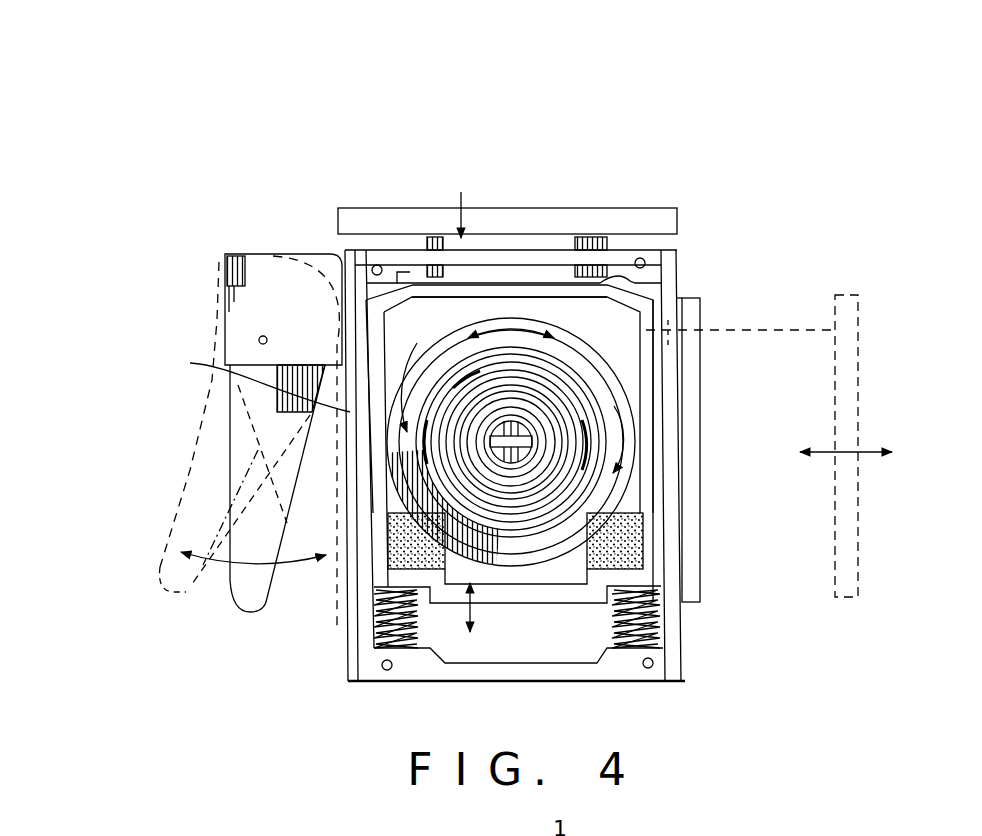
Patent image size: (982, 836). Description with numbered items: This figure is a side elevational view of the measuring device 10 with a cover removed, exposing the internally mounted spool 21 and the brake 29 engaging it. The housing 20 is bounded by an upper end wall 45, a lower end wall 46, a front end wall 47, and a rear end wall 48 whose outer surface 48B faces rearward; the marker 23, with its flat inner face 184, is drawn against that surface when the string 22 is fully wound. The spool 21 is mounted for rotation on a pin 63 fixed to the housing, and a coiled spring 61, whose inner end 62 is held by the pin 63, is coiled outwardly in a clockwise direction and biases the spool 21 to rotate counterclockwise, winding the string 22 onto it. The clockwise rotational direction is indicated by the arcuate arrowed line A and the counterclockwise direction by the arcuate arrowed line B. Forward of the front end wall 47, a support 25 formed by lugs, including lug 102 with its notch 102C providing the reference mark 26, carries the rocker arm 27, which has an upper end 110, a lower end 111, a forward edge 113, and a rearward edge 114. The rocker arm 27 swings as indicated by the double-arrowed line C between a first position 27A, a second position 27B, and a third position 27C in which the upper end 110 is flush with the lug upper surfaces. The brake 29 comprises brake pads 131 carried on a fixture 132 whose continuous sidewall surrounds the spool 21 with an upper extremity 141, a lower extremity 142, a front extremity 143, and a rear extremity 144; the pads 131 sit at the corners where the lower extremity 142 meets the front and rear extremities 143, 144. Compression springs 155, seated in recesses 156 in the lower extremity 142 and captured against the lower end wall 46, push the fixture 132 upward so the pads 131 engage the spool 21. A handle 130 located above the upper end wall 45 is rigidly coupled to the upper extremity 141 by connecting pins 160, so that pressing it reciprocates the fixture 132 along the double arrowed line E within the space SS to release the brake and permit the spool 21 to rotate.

The measuring device 10 is at (764, 166).
The housing 20 is at (682, 264).
The spool 21 is at (530, 250).
The string 22 is at (640, 350).
The marker 23 is at (703, 490).
The support 25 is at (301, 251).
The reference mark 26 is at (277, 249).
The rocker arm 27 is at (213, 422).
The first position of rocker arm 27A is at (170, 524).
The second position of rocker arm 27B is at (210, 310).
The third position of rocker arm 27C is at (226, 487).
The brake 29 is at (645, 298).
The upper end wall 45 is at (470, 288).
The lower end wall 46 is at (572, 673).
The front end wall 47 is at (350, 655).
The rear end wall 48 is at (680, 627).
The outer surface of rear end wall 48B is at (672, 319).
The coiled spring 61 is at (476, 400).
The inner end of coiled spring 62 is at (540, 428).
The pin 63 is at (540, 427).
The lug 102 is at (213, 287).
The notch 102C is at (278, 258).
The upper end of rocker arm 110 is at (213, 288).
The lower end of rocker arm 111 is at (165, 592).
The forward edge of rocker arm 113 is at (232, 430).
The rearward edge of rocker arm 114 is at (305, 435).
The handle 130 is at (594, 222).
The brake pads 131 is at (430, 557).
The fixture 132 is at (397, 284).
The upper extremity 141 is at (522, 310).
The lower extremity 142 is at (630, 585).
The front extremity 143 is at (246, 378).
The rear extremity 144 is at (645, 480).
The compression springs 155 is at (412, 647).
The recesses 156 is at (352, 645).
The connecting pins 160 is at (431, 238).
The inner face of marker 184 is at (650, 477).
The clockwise rotational direction A is at (630, 477).
The counterclockwise rotational direction B is at (408, 371).
The rocker arm swing direction C is at (233, 587).
The fixture reciprocation direction E is at (478, 590).
The spring space SS is at (578, 634).